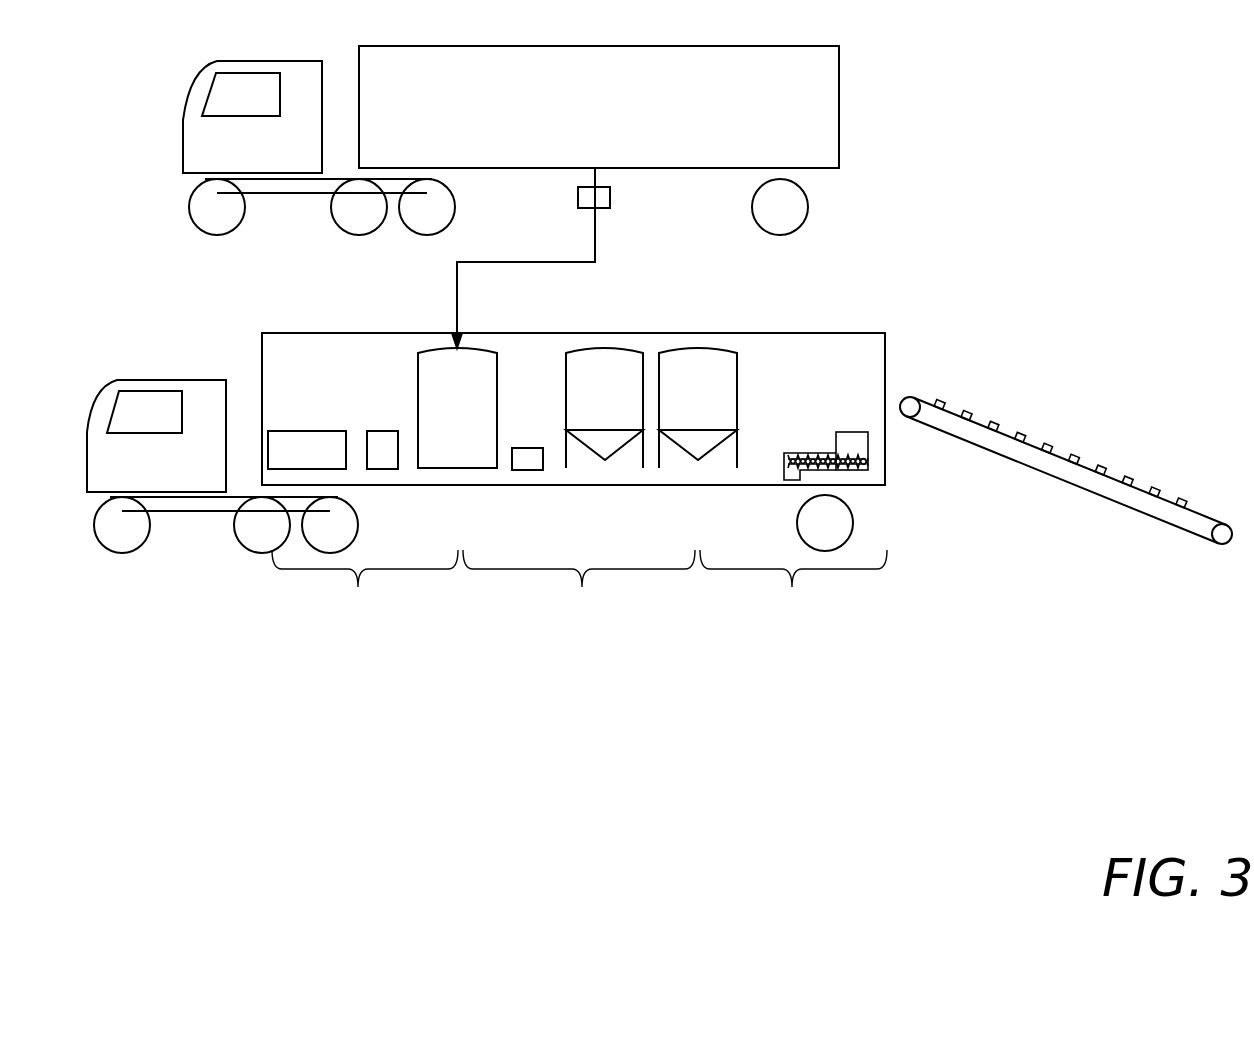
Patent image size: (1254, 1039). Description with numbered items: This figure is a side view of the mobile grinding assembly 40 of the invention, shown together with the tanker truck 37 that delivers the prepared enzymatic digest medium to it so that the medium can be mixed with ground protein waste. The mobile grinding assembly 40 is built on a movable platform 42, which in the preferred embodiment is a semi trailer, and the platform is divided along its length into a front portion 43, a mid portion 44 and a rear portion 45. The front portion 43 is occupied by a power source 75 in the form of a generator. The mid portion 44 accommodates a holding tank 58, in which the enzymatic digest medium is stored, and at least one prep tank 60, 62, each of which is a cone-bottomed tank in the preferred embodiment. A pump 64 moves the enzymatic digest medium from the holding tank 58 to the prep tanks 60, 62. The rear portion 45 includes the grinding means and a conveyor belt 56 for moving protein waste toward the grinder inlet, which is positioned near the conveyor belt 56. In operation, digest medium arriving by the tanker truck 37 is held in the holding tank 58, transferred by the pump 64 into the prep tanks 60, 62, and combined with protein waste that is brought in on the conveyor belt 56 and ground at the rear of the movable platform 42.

The tanker truck 37 is at (839, 68).
The mobile grinding assembly 40 is at (881, 258).
The movable platform 42 is at (578, 485).
The front portion 43 is at (365, 589).
The mid portion 44 is at (579, 589).
The rear portion 45 is at (793, 589).
The conveyor belt 56 is at (1007, 437).
The holding tank 58 is at (427, 348).
The prep tank 60 is at (598, 347).
The prep tank 62 is at (708, 347).
The pump 64 is at (517, 470).
The power source 75 is at (320, 431).